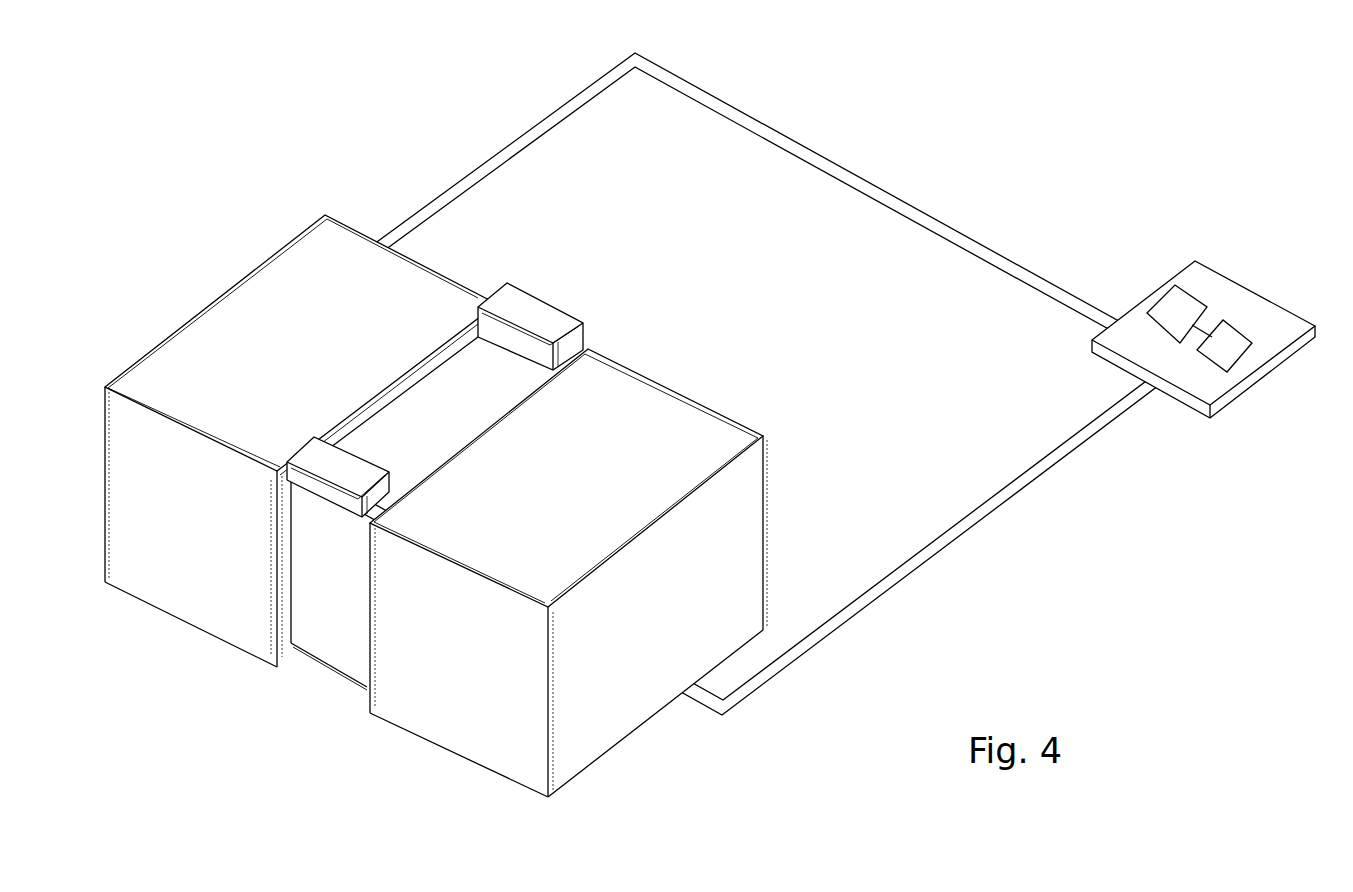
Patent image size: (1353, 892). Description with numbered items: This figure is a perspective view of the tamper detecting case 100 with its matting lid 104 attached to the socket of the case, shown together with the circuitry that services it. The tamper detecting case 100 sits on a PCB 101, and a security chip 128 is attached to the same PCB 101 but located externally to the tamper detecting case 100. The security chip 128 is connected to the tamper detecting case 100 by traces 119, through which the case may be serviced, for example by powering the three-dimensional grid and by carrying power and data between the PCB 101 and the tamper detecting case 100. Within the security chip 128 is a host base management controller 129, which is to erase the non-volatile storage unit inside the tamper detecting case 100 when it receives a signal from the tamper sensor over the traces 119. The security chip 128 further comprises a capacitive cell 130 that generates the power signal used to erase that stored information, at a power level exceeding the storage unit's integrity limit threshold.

The tamper detecting case 100 is at (250, 255).
The PCB 101 is at (710, 425).
The matting lid 104 is at (615, 490).
The traces 119 is at (877, 193).
The security chip 128 is at (1203, 327).
The host base management controller 129 is at (1168, 302).
The capacitive cell 130 is at (1222, 372).